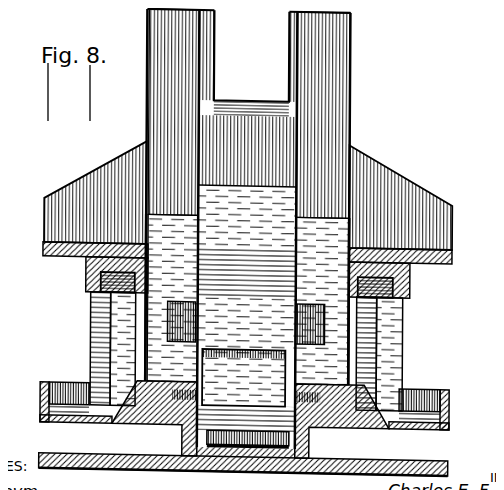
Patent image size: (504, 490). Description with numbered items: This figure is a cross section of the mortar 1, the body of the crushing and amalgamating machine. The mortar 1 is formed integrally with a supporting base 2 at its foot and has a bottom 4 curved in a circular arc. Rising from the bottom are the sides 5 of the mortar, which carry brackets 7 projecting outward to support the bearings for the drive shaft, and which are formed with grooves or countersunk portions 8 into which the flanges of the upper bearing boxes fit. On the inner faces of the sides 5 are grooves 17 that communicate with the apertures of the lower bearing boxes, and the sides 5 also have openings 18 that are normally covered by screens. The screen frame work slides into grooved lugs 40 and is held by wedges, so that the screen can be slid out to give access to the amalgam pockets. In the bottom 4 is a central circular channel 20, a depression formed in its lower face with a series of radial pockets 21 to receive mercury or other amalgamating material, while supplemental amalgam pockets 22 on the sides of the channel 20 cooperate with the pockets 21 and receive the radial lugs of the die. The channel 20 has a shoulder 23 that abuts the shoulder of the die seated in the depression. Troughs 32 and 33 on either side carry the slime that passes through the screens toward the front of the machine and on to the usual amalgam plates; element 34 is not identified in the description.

The mortar 1 is at (252, 63).
The supporting base 2 is at (84, 450).
The bottom 4 is at (80, 272).
The sides 5 is at (82, 295).
The brackets 7 is at (45, 237).
The grooves or countersunk portions 8 is at (140, 136).
The grooves 17 is at (142, 242).
The openings 18 is at (137, 302).
The central circular channel 20 is at (253, 441).
The radial pockets 21 is at (282, 478).
The supplemental amalgam pockets 22 is at (297, 313).
The shoulder 23 is at (257, 179).
The trough 32 is at (50, 378).
The trough 33 is at (415, 393).
The cylinder 34 is at (292, 31).
The grooved lugs 40 is at (399, 277).